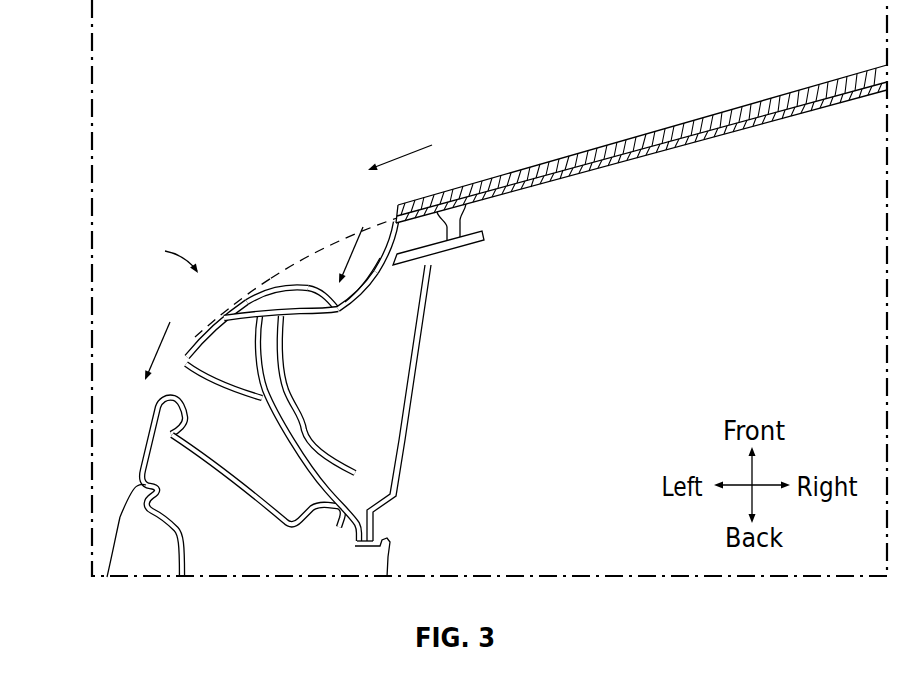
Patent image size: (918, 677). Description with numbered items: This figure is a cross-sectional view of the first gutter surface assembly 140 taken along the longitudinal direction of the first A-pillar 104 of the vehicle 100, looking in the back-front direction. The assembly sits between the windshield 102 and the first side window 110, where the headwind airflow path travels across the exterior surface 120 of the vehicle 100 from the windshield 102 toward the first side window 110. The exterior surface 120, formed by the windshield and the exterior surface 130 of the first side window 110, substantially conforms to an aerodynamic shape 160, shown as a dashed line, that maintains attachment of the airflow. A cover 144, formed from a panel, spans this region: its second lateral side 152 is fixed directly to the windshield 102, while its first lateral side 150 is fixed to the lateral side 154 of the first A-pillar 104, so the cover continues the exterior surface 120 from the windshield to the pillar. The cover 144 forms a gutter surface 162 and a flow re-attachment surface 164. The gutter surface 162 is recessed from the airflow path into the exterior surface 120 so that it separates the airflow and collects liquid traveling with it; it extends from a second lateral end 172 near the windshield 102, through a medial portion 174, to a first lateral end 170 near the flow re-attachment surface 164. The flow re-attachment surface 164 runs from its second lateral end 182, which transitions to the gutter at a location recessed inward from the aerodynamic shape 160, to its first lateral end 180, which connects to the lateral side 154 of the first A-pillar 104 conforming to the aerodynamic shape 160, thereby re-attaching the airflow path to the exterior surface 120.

The vehicle 100 is at (181, 41).
The windshield 102 is at (720, 127).
The first A-pillar 104 is at (415, 387).
The first side window 110 is at (120, 517).
The exterior surface 120 is at (585, 150).
The exterior surface of the first side window 130 is at (113, 550).
The first gutter surface assembly 140 is at (159, 257).
The cover 144 is at (233, 305).
The first lateral side 150 is at (184, 348).
The second lateral side 152 is at (390, 254).
The lateral side 154 is at (183, 372).
The aerodynamic shape 160 is at (270, 277).
The gutter surface 162 is at (340, 302).
The flow re-attachment surface 164 is at (210, 318).
The first lateral end 170 is at (309, 286).
The second lateral end 172 is at (396, 218).
The medial portion 174 is at (345, 312).
The first lateral end 180 is at (183, 364).
The second lateral end 182 is at (270, 276).